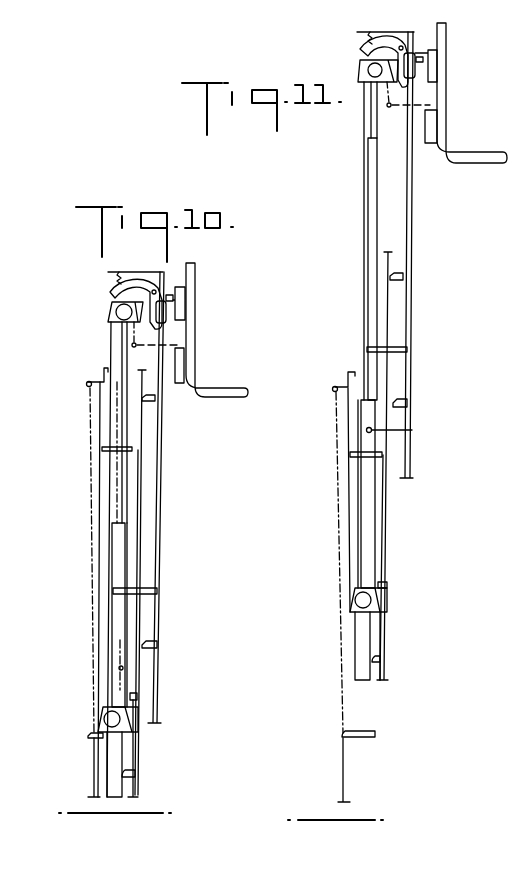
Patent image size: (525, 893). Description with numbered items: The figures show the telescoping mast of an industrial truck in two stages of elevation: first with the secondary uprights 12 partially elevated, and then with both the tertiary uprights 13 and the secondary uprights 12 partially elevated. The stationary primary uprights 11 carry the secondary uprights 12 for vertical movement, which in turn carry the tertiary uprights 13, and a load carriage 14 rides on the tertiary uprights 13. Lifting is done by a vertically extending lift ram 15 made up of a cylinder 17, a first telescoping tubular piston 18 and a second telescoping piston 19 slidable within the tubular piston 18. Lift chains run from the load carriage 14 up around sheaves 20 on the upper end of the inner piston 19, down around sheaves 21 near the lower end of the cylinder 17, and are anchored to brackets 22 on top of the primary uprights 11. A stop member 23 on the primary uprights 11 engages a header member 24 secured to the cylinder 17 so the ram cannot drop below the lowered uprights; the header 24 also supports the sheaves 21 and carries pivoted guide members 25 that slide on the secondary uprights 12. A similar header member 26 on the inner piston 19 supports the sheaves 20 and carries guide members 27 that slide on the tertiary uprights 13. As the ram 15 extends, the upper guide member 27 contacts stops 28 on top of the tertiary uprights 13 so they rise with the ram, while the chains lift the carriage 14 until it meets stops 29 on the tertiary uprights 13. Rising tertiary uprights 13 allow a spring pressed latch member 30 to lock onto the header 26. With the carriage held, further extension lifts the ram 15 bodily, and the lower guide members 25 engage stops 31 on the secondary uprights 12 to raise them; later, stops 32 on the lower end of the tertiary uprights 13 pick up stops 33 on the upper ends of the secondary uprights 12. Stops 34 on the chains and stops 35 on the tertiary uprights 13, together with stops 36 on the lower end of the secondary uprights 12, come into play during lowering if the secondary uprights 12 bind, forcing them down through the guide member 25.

In FIG. 10, the primary uprights 11 is at (100, 481).
In FIG. 11, the primary uprights 11 is at (343, 660).
In FIG. 10, the secondary uprights 12 is at (138, 446).
In FIG. 11, the secondary uprights 12 is at (387, 535).
In FIG. 10, the tertiary uprights 13 is at (161, 462).
In FIG. 11, the tertiary uprights 13 is at (413, 176).
In FIG. 10, the load carriage 14 is at (189, 312).
In FIG. 11, the load carriage 14 is at (448, 106).
In FIG. 10, the lift ram 15 is at (106, 563).
In FIG. 11, the lift ram 15 is at (352, 542).
In FIG. 10, the cylinder 17 is at (127, 537).
In FIG. 11, the cylinder 17 is at (363, 557).
In FIG. 10, the first telescoping tubular piston 18 is at (127, 497).
In FIG. 11, the first telescoping tubular piston 18 is at (368, 206).
In FIG. 11, the second telescoping piston 19 is at (369, 126).
In FIG. 10, the sheaves 20 is at (116, 313).
In FIG. 11, the sheaves 20 is at (368, 64).
In FIG. 10, the sheaves 21 is at (112, 719).
In FIG. 11, the sheaves 21 is at (356, 601).
In FIG. 10, the brackets 22 is at (88, 381).
In FIG. 11, the brackets 22 is at (336, 383).
In FIG. 10, the stop member 23 is at (100, 735).
In FIG. 11, the stop member 23 is at (343, 734).
In FIG. 10, the header member 24 is at (103, 707).
In FIG. 11, the header member 24 is at (355, 588).
In FIG. 10, the guide members 25 is at (136, 732).
In FIG. 11, the guide members 25 is at (389, 600).
In FIG. 10, the header member 26 is at (110, 304).
In FIG. 11, the header member 26 is at (360, 75).
In FIG. 10, the guide members 27 is at (166, 322).
In FIG. 11, the guide members 27 is at (417, 70).
In FIG. 10, the stops 28 is at (168, 295).
In FIG. 11, the stops 28 is at (420, 56).
In FIG. 10, the stops 29 is at (177, 289).
In FIG. 11, the stops 29 is at (424, 52).
In FIG. 10, the latch member 30 is at (131, 282).
In FIG. 11, the latch member 30 is at (366, 41).
In FIG. 10, the stops 31 is at (137, 696).
In FIG. 11, the stops 31 is at (388, 584).
In FIG. 10, the stops 32 is at (150, 642).
In FIG. 11, the stops 32 is at (404, 399).
In FIG. 10, the stops 33 is at (153, 400).
In FIG. 11, the stops 33 is at (403, 277).
In FIG. 11, the stops 34 is at (402, 430).
In FIG. 10, the stops 35 is at (146, 590).
In FIG. 11, the stops 35 is at (395, 348).
In FIG. 10, the stops 36 is at (132, 777).
In FIG. 11, the stops 36 is at (379, 659).